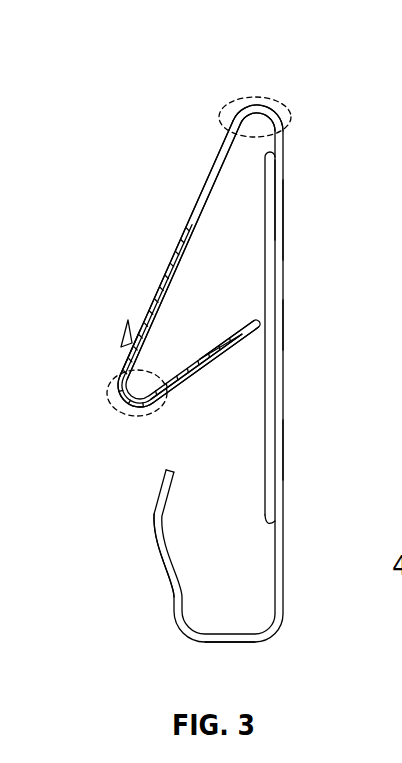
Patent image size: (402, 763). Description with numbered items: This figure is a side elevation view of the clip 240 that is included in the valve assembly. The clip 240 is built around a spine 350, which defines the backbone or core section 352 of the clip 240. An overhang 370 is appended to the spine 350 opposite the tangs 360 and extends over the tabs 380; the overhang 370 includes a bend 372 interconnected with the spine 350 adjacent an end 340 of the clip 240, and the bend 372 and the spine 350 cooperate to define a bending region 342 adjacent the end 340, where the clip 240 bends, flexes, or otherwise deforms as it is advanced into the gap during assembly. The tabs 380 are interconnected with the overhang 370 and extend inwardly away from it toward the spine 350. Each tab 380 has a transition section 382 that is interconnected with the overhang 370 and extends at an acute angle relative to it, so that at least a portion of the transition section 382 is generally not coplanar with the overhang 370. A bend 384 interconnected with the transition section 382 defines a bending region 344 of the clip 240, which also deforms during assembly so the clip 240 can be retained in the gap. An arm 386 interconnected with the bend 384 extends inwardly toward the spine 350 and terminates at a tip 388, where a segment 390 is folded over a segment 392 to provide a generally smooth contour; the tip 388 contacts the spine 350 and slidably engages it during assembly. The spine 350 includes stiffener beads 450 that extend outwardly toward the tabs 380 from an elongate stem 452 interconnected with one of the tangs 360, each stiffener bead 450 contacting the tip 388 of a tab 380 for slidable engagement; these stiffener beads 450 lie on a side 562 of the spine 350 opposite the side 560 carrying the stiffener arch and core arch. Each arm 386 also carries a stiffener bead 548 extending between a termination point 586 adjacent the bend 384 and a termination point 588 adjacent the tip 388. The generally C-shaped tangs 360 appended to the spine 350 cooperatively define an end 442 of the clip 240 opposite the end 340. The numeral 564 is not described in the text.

The clip 240 is at (277, 49).
The end 340 is at (240, 107).
The bend 372 is at (273, 103).
The bending region 342 is at (292, 111).
The side 562 is at (260, 187).
The overhang 370 is at (178, 227).
The core section 352 is at (276, 183).
The sleeve inner portion 564 is at (165, 318).
The spine 350 is at (281, 227).
The tabs 380 is at (150, 345).
The segment 392 is at (246, 317).
The tip 388 is at (252, 312).
The side 560 is at (282, 323).
The segment 390 is at (232, 355).
The termination point 588 is at (233, 342).
The stiffener beads 450 is at (274, 405).
The elongate stem 452 is at (278, 457).
The transition section 382 is at (116, 362).
The bend 384 is at (118, 408).
The arm 386 is at (198, 383).
The termination point 586 is at (169, 399).
The bending region 344 is at (152, 417).
The stiffener beads 548 is at (223, 360).
The tangs 360 is at (172, 594).
The end 442 is at (238, 642).